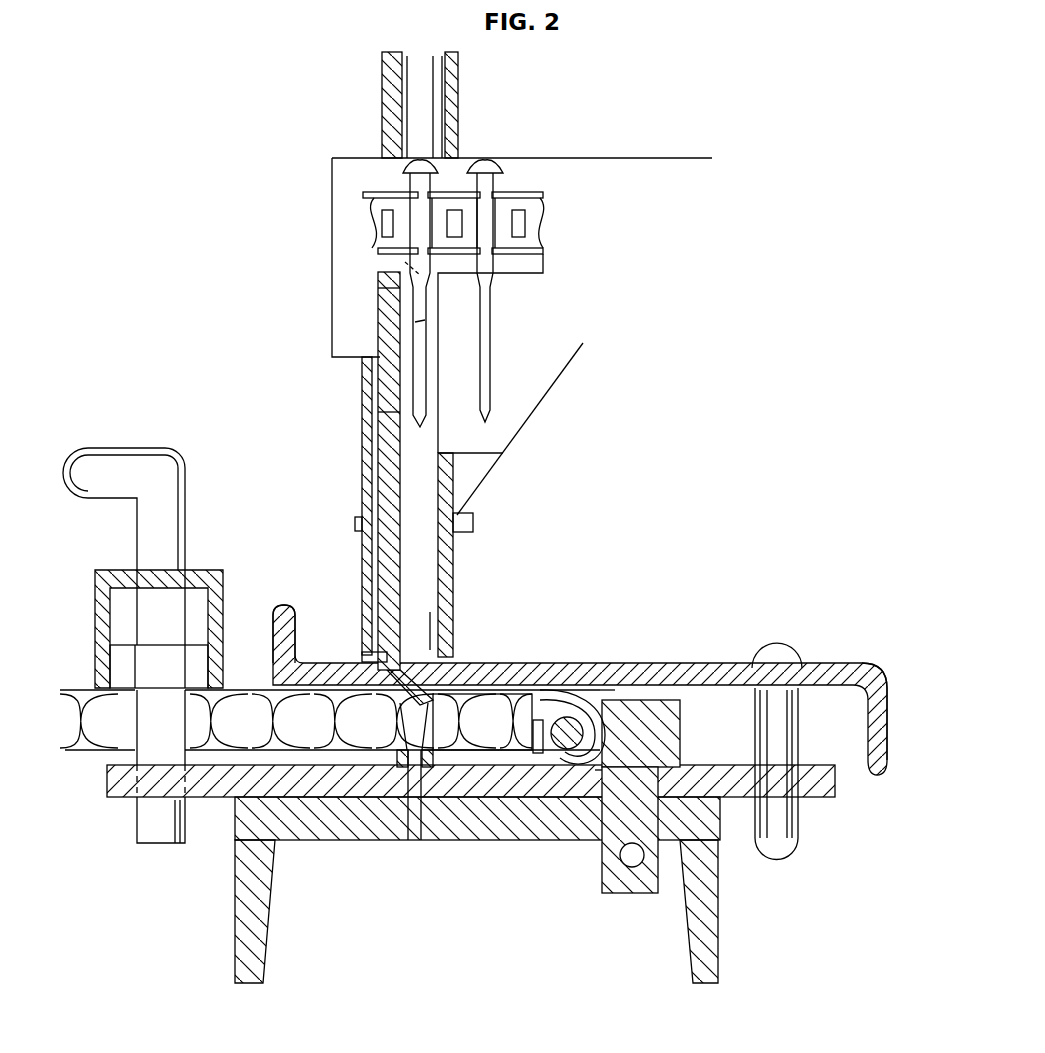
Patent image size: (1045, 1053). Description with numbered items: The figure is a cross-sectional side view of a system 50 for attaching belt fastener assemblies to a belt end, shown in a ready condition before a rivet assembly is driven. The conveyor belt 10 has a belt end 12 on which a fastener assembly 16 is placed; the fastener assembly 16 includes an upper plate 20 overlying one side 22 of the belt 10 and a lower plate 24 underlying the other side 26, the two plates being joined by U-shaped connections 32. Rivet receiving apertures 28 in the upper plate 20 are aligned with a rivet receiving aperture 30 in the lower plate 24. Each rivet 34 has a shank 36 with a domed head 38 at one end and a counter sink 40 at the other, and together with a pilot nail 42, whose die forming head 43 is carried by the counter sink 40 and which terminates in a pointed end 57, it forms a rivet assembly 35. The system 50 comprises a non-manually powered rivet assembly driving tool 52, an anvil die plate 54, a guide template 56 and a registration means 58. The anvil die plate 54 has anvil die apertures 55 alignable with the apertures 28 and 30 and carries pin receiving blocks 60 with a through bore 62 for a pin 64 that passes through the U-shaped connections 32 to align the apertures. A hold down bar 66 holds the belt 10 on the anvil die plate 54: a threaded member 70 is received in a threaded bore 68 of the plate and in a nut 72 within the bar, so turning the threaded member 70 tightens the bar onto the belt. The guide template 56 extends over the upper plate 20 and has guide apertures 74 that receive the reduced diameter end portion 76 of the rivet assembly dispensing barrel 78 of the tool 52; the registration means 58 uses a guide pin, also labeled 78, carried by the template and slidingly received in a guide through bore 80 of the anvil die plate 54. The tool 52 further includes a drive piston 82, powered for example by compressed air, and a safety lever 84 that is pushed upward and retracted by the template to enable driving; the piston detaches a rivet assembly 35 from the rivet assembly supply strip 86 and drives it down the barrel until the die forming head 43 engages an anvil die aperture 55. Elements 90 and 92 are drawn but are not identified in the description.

The conveyor belt 10 is at (262, 692).
The belt end 12 is at (538, 688).
The fastener assembly 16 is at (565, 688).
The upper plate 20 is at (505, 690).
The one side of the belt 22 is at (267, 690).
The lower plate 24 is at (477, 765).
The other side of the belt 26 is at (303, 766).
The rivet receiving apertures 28 is at (432, 612).
The rivet receiving aperture 30 is at (397, 785).
The U-shaped connections 32 is at (612, 690).
The rivet 34 is at (385, 172).
The rivet assembly 35 is at (455, 231).
The shank 36 is at (420, 223).
The domed head 38 is at (420, 158).
The counter sink 40 is at (420, 265).
The pilot nail 42 is at (415, 322).
The die forming head 43 is at (378, 288).
The system 50 is at (695, 360).
The non-manually powered rivet assembly driving tool 52 is at (588, 158).
The anvil die plate 54 is at (540, 790).
The anvil die apertures 55 is at (411, 768).
The guide template 56 is at (688, 664).
The pointed end 57 is at (378, 412).
The registration means 58 is at (820, 722).
The pin receiving blocks 60 is at (672, 733).
The through bore 62 is at (568, 718).
The pin 64 is at (595, 770).
The hold down bar 66 is at (212, 572).
The threaded bore 68 is at (150, 800).
The threaded member 70 is at (172, 512).
The nut 72 is at (125, 660).
The guide apertures 74 is at (366, 575).
The reduced diameter end portion 76 is at (368, 655).
The rivet assembly dispensing barrel 78 is at (448, 562).
The guide through bore 80 is at (790, 820).
The drive piston 82 is at (425, 108).
The safety lever 84 is at (378, 484).
The rivet assembly supply strip 86 is at (543, 215).
The lip 90 is at (290, 605).
The bent flange 92 is at (882, 683).